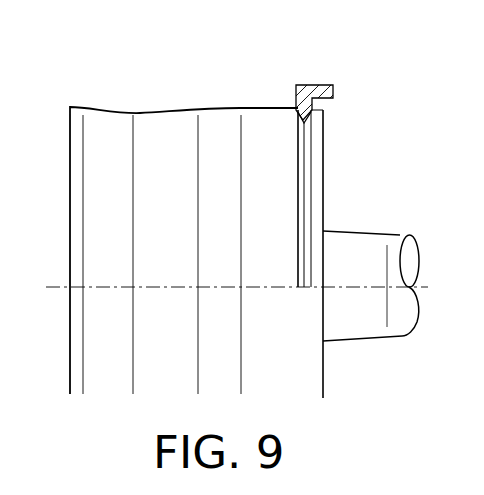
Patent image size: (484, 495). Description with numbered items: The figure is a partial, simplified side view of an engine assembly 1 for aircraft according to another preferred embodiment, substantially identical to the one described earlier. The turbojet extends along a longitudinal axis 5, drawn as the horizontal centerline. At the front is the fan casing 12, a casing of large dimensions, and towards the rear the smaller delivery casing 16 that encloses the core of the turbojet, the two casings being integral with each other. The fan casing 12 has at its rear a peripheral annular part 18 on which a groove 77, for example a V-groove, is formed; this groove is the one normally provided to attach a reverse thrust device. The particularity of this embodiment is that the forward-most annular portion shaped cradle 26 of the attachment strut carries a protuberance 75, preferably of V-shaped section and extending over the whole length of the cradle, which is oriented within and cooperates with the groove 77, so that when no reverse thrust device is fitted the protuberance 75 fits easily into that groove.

The engine assembly 1 is at (228, 61).
The fan casing 12 is at (171, 121).
The longitudinal axis 5 is at (110, 286).
The forward-most annular portion shaped cradle 26 is at (316, 80).
The protuberance 75 is at (298, 110).
The groove 77 is at (309, 122).
The delivery casing 16 is at (346, 231).
The peripheral annular part 18 is at (326, 387).